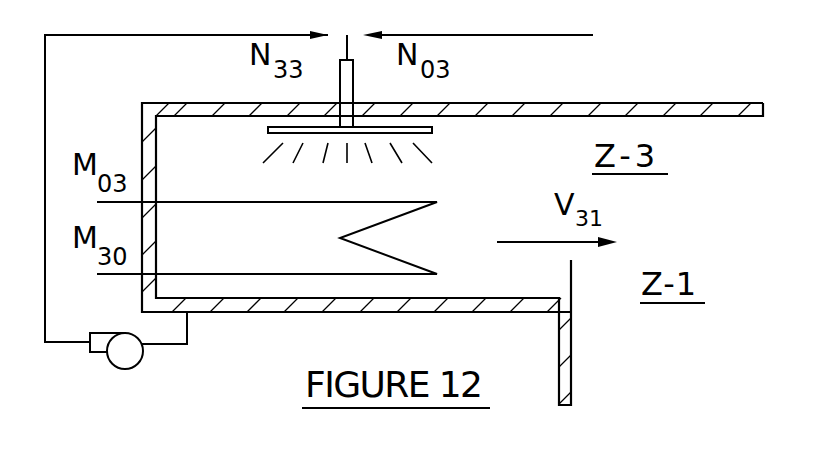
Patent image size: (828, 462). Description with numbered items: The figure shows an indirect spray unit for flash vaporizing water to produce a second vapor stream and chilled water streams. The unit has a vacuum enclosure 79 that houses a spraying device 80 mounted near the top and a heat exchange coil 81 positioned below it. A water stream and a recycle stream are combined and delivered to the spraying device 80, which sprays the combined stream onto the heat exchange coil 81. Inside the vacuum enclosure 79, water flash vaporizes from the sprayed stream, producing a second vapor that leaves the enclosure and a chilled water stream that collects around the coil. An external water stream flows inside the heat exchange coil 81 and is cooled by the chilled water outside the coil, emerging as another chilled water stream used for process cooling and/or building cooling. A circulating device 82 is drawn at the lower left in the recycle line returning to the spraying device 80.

The vacuum enclosure 79 is at (210, 101).
The spraying device 80 is at (432, 130).
The heat exchange coil 81 is at (278, 202).
The fan 82 is at (140, 367).